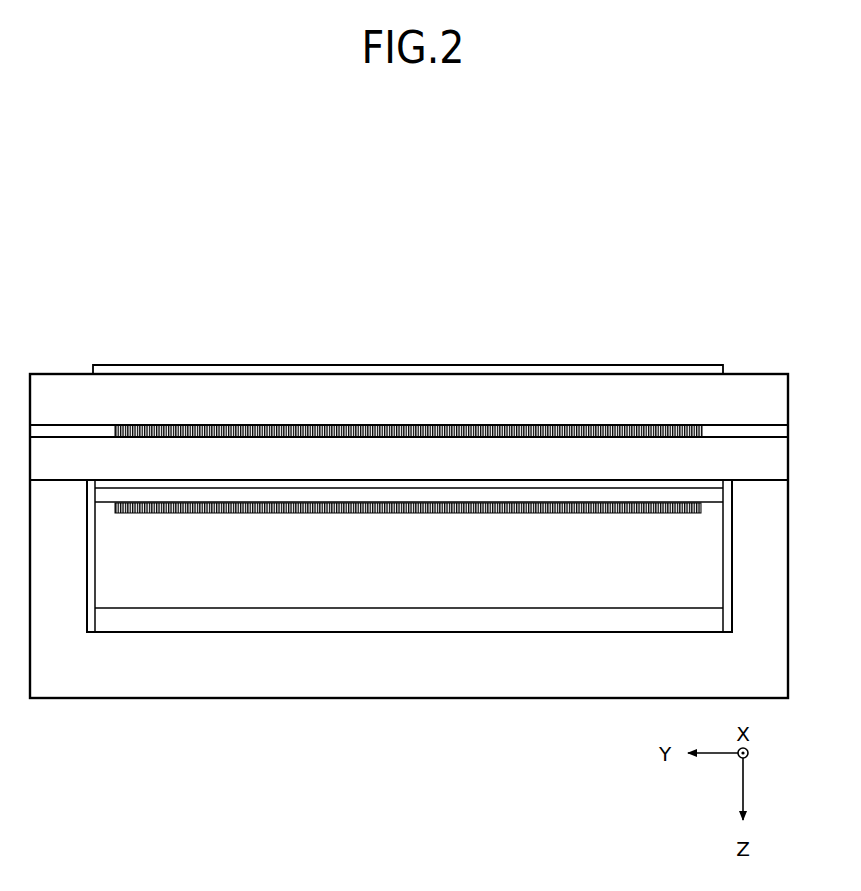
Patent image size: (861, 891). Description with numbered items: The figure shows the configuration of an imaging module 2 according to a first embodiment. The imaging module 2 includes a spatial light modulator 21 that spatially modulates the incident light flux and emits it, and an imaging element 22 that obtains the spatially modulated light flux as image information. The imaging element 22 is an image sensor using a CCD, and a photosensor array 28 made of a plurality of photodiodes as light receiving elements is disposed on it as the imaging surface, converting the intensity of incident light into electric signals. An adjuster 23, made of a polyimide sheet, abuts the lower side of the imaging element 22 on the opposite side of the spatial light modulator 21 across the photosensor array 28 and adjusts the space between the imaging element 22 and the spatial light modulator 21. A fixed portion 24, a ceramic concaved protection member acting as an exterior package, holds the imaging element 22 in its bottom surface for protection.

The imaging module 2 is at (686, 343).
The spatial light modulator 21 is at (67, 373).
The imaging element 22 is at (114, 565).
The adjuster 23 is at (388, 630).
The fixed portion 24 is at (339, 698).
The photosensor array 28 is at (353, 513).